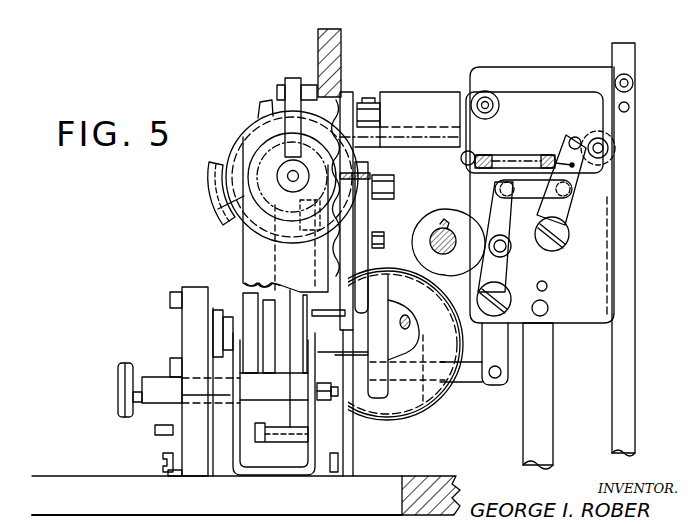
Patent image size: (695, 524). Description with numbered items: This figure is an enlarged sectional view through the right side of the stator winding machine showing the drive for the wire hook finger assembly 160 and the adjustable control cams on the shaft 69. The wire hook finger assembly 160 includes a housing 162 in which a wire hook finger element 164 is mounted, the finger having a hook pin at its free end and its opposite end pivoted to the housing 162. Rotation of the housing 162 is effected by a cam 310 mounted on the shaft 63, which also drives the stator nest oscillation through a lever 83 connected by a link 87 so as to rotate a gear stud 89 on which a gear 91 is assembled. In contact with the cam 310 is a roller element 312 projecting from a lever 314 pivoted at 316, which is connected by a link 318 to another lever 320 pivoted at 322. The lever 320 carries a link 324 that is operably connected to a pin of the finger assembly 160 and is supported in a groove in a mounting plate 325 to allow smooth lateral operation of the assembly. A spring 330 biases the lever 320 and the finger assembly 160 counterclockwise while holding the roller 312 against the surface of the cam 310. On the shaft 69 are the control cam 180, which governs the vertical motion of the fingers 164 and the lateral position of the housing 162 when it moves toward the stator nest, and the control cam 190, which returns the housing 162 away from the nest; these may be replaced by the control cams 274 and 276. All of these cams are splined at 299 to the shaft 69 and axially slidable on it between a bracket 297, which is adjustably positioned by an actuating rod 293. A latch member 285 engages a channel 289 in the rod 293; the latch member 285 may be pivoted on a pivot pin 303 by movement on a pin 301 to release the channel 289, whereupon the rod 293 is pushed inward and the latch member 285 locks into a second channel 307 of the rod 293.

The wire hook finger assembly 160 is at (232, 105).
The housing 162 is at (203, 173).
The wire hook finger element 164 is at (218, 208).
The cam 180 is at (257, 277).
The control cam 190 is at (248, 282).
The control cam 274 is at (250, 317).
The control cam 276 is at (227, 322).
The channel 307 is at (138, 376).
The actuating rod 293 is at (163, 377).
The channel 289 is at (180, 400).
The pin 301 is at (157, 432).
The latch member 285 is at (164, 452).
The pivot pin 303 is at (169, 471).
The bracket 297 is at (242, 442).
The spline 299 is at (356, 318).
The shaft 69 is at (338, 349).
The shaft 63 is at (428, 242).
The gear stud 89 is at (423, 333).
The gear 91 is at (412, 417).
The lever 83 is at (518, 346).
The link 87 is at (472, 376).
The mounting plate 325 is at (398, 97).
The lever 320 is at (608, 182).
The spring 330 is at (503, 154).
The link 324 is at (548, 148).
The link 318 is at (525, 236).
The pivot 322 is at (568, 231).
The roller element 312 is at (510, 254).
The lever 314 is at (503, 275).
The pivot 316 is at (512, 297).
The cam 310 is at (443, 210).